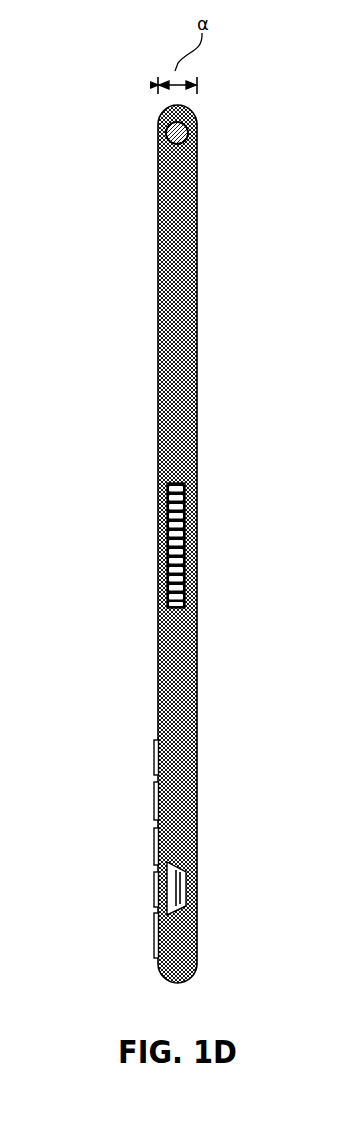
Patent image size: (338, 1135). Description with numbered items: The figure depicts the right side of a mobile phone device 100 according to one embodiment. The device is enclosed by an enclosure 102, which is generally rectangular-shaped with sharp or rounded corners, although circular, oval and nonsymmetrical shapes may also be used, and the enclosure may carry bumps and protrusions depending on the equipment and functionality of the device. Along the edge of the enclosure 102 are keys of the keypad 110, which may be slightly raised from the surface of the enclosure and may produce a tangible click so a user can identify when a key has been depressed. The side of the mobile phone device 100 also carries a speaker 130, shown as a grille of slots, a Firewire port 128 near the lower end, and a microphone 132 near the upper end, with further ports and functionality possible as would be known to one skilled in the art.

The mobile phone device 100 is at (122, 151).
The enclosure 102 is at (177, 322).
The keypad 110 is at (138, 852).
The Firewire port 128 is at (189, 869).
The speaker 130 is at (186, 531).
The microphone 132 is at (188, 129).